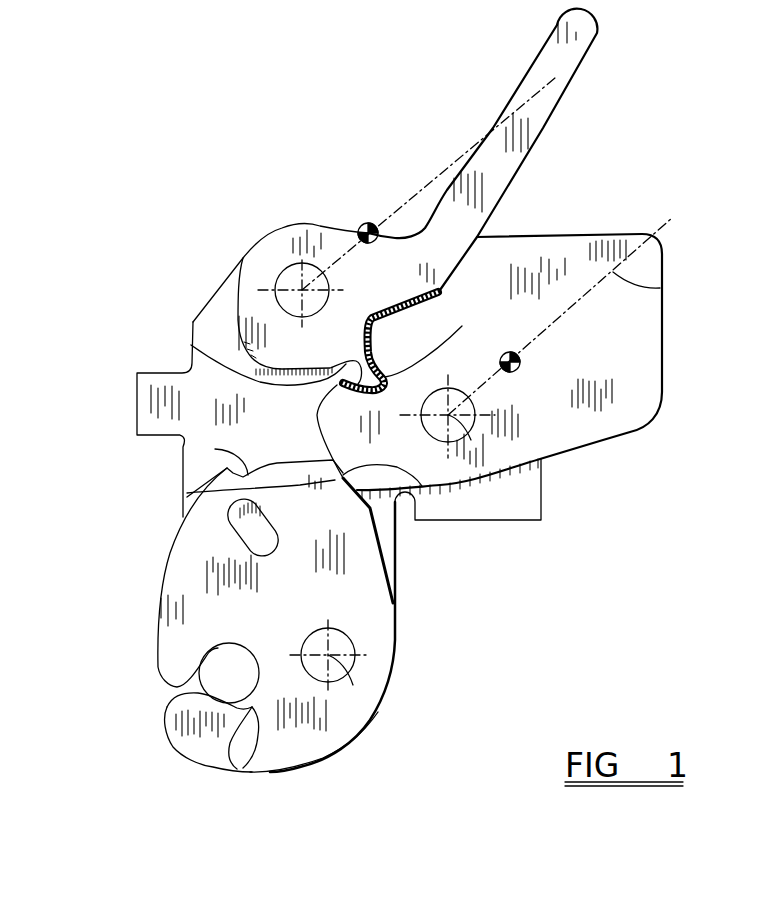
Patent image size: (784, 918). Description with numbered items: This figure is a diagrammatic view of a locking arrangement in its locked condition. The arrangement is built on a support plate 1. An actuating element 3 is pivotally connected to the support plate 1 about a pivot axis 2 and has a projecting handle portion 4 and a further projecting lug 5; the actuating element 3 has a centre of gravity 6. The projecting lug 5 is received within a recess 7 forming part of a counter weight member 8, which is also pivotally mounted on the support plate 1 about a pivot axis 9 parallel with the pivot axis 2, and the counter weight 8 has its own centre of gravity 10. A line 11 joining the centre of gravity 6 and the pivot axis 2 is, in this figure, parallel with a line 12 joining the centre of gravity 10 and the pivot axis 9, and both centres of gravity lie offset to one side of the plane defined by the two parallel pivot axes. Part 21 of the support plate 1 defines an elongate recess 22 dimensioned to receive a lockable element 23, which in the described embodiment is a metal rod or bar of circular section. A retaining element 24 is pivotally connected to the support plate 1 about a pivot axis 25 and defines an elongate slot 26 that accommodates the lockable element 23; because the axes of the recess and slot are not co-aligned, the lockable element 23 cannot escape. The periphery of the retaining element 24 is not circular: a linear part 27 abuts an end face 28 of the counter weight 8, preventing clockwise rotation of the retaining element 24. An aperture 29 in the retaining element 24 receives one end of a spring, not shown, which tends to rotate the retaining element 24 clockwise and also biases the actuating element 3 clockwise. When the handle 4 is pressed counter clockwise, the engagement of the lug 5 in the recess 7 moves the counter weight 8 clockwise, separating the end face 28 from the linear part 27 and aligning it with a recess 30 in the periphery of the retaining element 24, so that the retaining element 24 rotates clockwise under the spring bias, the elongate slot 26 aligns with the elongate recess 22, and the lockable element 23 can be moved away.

The support plate 1 is at (228, 343).
The pivot axis 2 is at (302, 290).
The actuating element 3 is at (402, 272).
The projecting handle portion 4 is at (550, 70).
The projecting lug 5 is at (191, 345).
The centre of gravity 6 is at (361, 229).
The recess 7 is at (462, 326).
The counter weight member 8 is at (628, 357).
The pivot axis 9 is at (471, 440).
The centre of gravity 10 is at (521, 367).
The line 11 is at (450, 163).
The line 12 is at (662, 288).
The part of the support plate 21 is at (185, 748).
The elongate recess 22 is at (152, 688).
The lockable element 23 is at (240, 768).
The retaining element 24 is at (370, 608).
The pivot axis 25 is at (355, 690).
The elongate slot 26 is at (209, 648).
The linear part 27 is at (187, 497).
The end face 28 is at (422, 486).
The aperture 29 is at (233, 525).
The recess 30 is at (215, 449).